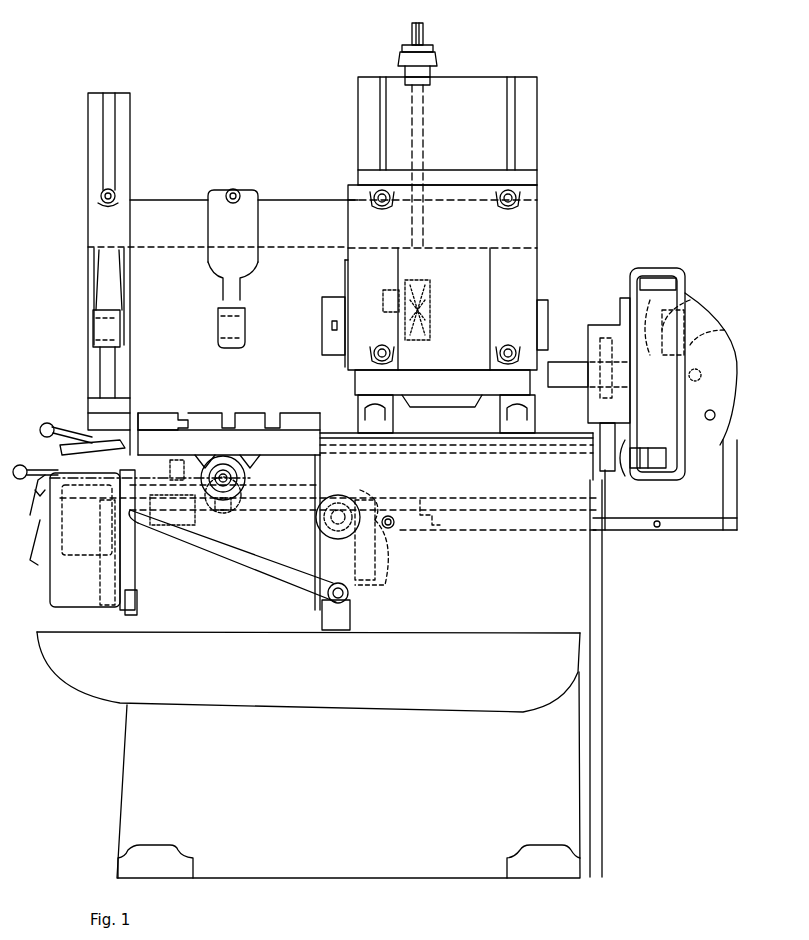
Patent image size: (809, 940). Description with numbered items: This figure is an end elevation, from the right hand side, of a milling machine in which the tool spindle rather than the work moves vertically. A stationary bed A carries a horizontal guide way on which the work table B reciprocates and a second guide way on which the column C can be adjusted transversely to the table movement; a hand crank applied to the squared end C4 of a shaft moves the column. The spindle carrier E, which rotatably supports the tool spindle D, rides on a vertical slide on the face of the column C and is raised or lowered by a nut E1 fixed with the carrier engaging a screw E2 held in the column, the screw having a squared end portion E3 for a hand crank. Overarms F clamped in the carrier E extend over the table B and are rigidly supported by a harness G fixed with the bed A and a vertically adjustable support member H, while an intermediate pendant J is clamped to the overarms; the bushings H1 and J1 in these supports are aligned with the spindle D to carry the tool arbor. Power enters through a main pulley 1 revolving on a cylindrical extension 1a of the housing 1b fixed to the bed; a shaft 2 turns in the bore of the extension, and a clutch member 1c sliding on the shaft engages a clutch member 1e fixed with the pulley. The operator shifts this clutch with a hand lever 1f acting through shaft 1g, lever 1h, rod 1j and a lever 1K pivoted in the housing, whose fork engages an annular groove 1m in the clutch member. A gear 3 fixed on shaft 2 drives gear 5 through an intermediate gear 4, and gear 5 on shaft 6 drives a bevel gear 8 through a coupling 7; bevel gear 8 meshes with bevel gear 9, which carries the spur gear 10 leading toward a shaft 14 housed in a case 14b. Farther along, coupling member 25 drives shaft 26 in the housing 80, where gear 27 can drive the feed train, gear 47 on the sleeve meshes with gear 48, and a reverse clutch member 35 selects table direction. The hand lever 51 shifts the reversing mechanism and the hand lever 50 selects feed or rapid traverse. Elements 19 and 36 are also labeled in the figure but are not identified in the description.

The bed A is at (130, 764).
The work table B is at (250, 425).
The column C is at (533, 122).
The squared end C4 is at (660, 522).
The tool spindle D is at (338, 300).
The spindle carrier E is at (522, 235).
The nut E1 is at (424, 308).
The screw E2 is at (425, 147).
The squared end portion E3 is at (426, 30).
The overarms F is at (155, 204).
The harness G is at (88, 168).
The support member H is at (96, 278).
The arbor bushing H1 is at (95, 312).
The pendant J is at (245, 197).
The arbor bushing J1 is at (218, 312).
The main pulley 1 is at (668, 456).
The cylindrical extension 1a is at (682, 294).
The housing 1b is at (634, 292).
The clutch member 1c is at (700, 322).
The clutch member 1e is at (690, 303).
The annular groove 1m is at (715, 335).
The lever 1K is at (735, 474).
The hand lever 1f is at (248, 560).
The shaft 1g is at (326, 598).
The lever 1h is at (380, 583).
The rod 1j is at (428, 520).
The shaft 2 is at (570, 372).
The gear 3 is at (612, 330).
The intermediate gear 4 is at (632, 455).
The gear 5 is at (617, 530).
The shaft 6 is at (495, 507).
The coupling 7 is at (410, 508).
The bevel gear 8 is at (78, 450).
The bevel gear 9 is at (40, 496).
The spur gear 10 is at (360, 500).
The shaft 14 is at (333, 497).
The case 14b is at (353, 495).
The screw 19 is at (254, 498).
The coupling member 25 is at (220, 562).
The shaft 26 is at (130, 607).
The gear 27 is at (178, 462).
The reverse clutch member 35 is at (260, 455).
The hand wheel 36 is at (220, 456).
The gear 47 is at (195, 568).
The gear 48 is at (200, 522).
The hand lever 50 is at (20, 480).
The hand lever 51 is at (47, 422).
The housing 80 is at (110, 614).